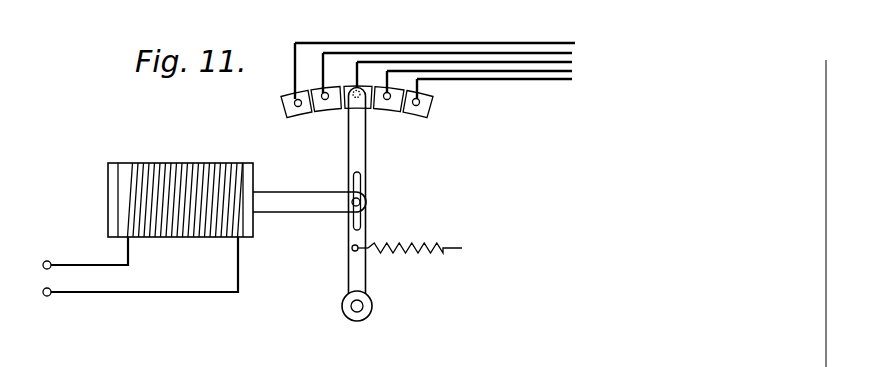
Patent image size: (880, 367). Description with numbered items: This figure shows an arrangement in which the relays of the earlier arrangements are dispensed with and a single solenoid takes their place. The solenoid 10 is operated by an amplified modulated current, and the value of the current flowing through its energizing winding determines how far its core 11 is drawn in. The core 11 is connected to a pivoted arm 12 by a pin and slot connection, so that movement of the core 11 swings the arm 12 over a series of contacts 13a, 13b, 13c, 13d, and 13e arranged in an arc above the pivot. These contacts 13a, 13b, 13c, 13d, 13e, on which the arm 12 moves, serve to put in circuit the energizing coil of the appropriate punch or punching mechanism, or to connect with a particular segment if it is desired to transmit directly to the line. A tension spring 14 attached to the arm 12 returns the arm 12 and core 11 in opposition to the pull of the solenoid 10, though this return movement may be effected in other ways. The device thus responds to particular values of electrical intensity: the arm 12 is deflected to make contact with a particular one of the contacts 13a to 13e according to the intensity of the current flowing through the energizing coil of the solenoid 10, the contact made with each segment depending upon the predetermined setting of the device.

The solenoid 10 is at (245, 238).
The core 11 is at (308, 202).
The arm 12 is at (358, 162).
The contact 13a is at (296, 107).
The contact 13b is at (321, 92).
The contact 13c is at (353, 98).
The contact 13d is at (387, 100).
The contact 13e is at (424, 118).
The tension spring 14 is at (432, 250).